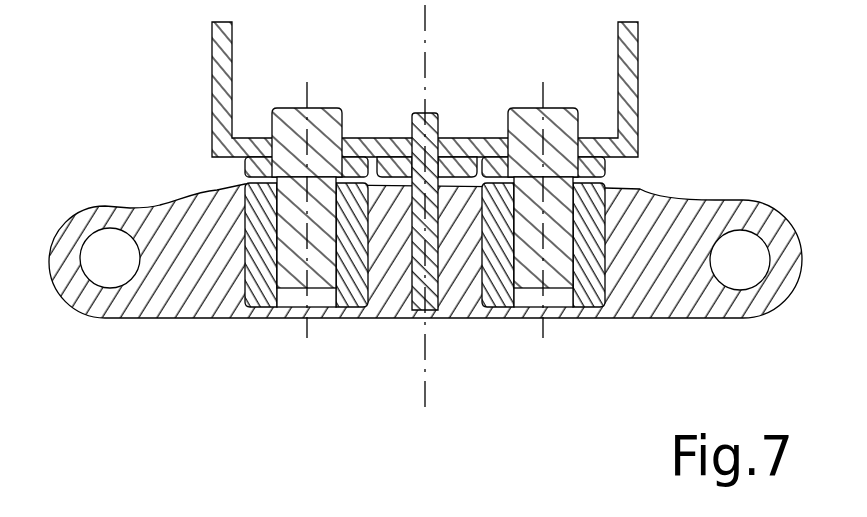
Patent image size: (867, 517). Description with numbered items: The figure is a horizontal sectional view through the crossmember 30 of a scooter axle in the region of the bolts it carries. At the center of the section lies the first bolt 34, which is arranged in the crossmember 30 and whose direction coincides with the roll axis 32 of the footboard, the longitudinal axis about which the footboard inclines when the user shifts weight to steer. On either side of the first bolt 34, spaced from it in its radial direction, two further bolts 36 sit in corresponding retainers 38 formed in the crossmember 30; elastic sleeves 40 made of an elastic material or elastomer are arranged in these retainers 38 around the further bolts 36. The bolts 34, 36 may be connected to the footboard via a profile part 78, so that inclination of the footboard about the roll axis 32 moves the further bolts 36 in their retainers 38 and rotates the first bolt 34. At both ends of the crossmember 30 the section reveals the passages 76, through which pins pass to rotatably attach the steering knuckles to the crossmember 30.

The crossmember 30 is at (172, 300).
The roll axis 32 is at (427, 75).
The first bolt 34 is at (418, 293).
The further bolts 36 is at (297, 292).
The retainers 38 is at (323, 297).
The sleeves 40 is at (243, 217).
The passages 76 is at (107, 258).
The profile part 78 is at (252, 145).